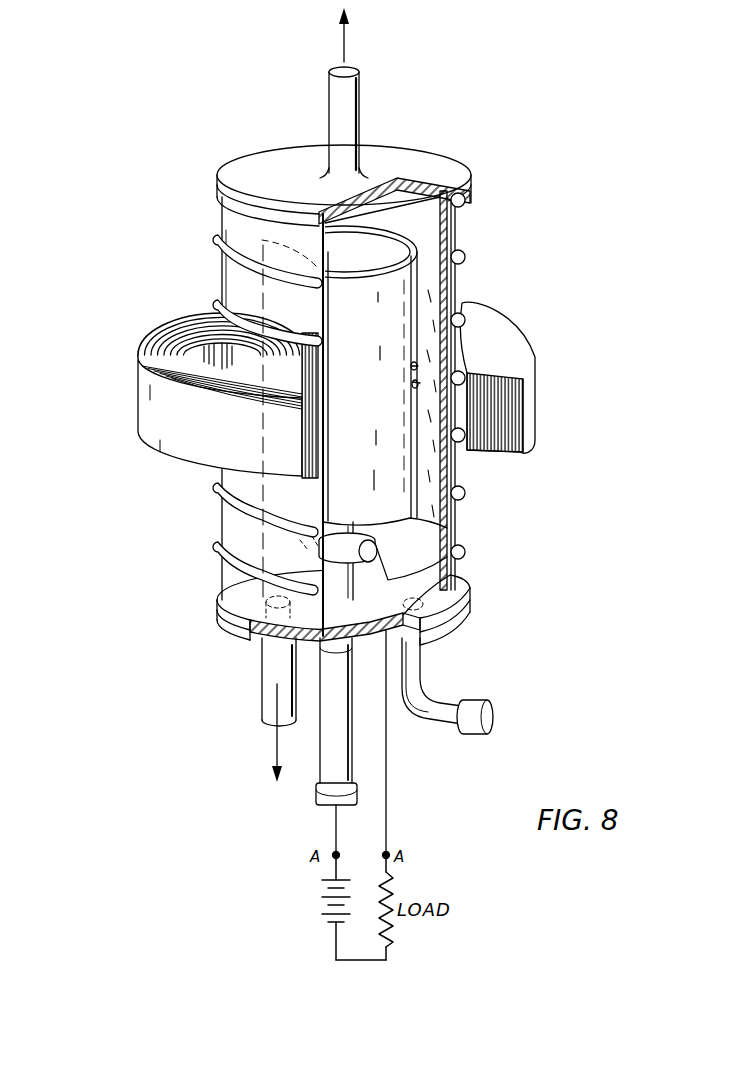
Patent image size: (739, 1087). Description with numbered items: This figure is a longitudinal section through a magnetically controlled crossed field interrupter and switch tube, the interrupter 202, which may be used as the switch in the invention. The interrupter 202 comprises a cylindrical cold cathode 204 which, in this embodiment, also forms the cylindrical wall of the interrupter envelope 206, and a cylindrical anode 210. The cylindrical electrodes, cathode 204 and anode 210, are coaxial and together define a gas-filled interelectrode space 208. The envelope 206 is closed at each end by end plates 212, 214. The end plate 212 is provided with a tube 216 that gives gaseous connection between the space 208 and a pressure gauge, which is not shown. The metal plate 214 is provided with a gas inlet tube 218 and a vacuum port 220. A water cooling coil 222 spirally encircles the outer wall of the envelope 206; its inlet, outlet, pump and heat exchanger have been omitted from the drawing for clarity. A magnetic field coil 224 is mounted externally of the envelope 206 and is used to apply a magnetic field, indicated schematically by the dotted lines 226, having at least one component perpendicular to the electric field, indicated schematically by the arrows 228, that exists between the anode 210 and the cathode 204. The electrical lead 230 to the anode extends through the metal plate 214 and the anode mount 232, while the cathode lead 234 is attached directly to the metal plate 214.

The interrupter 202 is at (185, 221).
The cylindrical cold cathode 204 is at (463, 227).
The interrupter envelope 206 is at (232, 282).
The gas-filled interelectrode space 208 is at (428, 274).
The cylindrical anode 210 is at (372, 318).
The end plate 212 is at (222, 174).
The metal plate 214 is at (218, 617).
The tube 216 is at (346, 119).
The gas inlet tube 218 is at (413, 689).
The vacuum port 220 is at (270, 672).
The water cooling coil 222 is at (465, 498).
The magnetic field coil 224 is at (524, 390).
The magnetic field 226 is at (412, 368).
The electric field 228 is at (428, 500).
The electrical lead 230 is at (334, 833).
The anode mount 232 is at (303, 557).
The cathode lead 234 is at (388, 783).